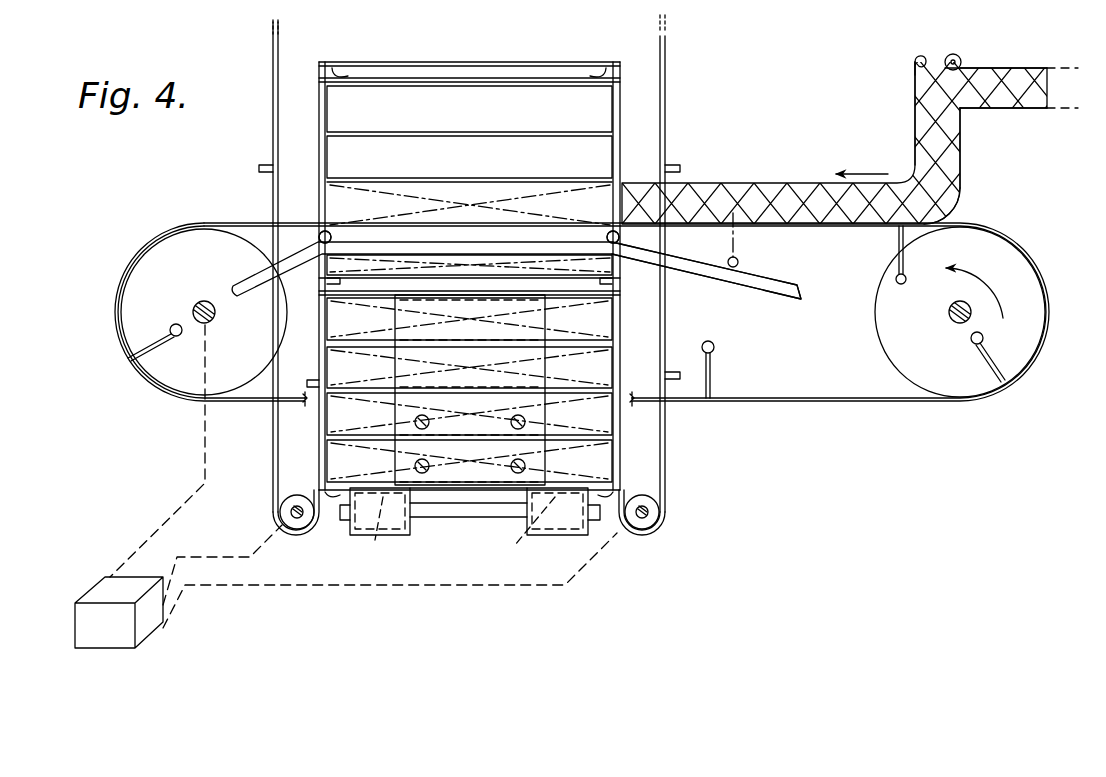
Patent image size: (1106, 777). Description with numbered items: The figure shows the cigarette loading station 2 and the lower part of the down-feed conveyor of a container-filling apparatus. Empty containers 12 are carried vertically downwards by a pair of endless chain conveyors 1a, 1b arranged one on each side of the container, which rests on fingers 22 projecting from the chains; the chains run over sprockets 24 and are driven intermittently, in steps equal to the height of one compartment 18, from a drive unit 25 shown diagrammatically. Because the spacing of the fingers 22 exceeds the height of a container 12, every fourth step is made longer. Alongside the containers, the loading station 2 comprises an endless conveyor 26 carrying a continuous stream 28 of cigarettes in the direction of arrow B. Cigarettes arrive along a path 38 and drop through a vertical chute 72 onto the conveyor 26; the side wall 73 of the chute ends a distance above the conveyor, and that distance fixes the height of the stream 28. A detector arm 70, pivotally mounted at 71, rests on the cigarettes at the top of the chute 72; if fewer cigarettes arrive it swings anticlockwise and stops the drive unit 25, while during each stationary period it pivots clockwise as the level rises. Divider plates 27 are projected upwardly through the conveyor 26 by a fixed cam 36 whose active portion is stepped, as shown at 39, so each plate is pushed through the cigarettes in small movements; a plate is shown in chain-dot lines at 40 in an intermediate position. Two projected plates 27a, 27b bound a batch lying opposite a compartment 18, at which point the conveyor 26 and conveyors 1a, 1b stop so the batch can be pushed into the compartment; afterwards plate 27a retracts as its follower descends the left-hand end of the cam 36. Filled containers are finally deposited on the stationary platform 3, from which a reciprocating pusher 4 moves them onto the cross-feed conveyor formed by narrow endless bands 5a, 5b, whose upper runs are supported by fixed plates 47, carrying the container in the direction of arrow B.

The endless chain conveyor 1a is at (273, 72).
The endless chain conveyor 1b is at (665, 78).
The cigarette loading station 2 is at (302, 202).
The stationary platform 3 is at (448, 490).
The reciprocating pusher 4 is at (410, 400).
The endless conveyor band 5a is at (365, 527).
The endless conveyor band 5b is at (557, 522).
The container 12 is at (602, 121).
The compartment 18 is at (440, 105).
The finger 22 is at (340, 72).
The sprocket 24 is at (285, 512).
The drive unit 25 is at (120, 622).
The endless conveyor 26 is at (882, 406).
The divider plate 27 is at (907, 280).
The divider plate 27a is at (325, 231).
The divider plate 27b is at (613, 231).
The continuous stream of cigarettes 28 is at (796, 166).
The fixed cam 36 is at (786, 304).
The path 38 is at (994, 92).
The stepped part of cam 39 is at (770, 280).
The divider plate intermediate position 40 is at (738, 249).
The fixed plate 47 is at (375, 540).
The detector arm 70 is at (917, 60).
The pivot 71 is at (962, 60).
The vertical chute 72 is at (957, 172).
The side wall 73 is at (915, 110).
The arrow B is at (876, 158).